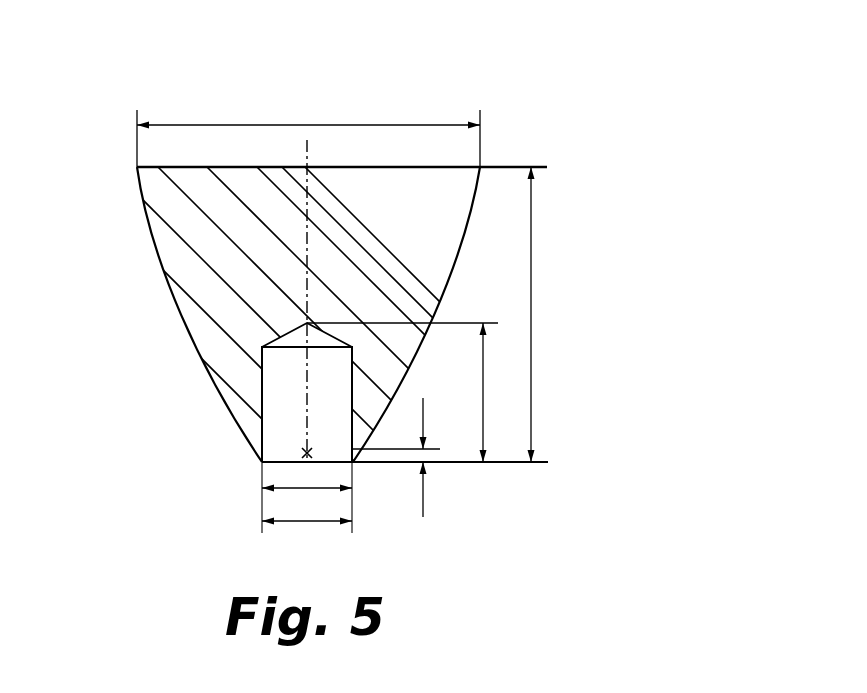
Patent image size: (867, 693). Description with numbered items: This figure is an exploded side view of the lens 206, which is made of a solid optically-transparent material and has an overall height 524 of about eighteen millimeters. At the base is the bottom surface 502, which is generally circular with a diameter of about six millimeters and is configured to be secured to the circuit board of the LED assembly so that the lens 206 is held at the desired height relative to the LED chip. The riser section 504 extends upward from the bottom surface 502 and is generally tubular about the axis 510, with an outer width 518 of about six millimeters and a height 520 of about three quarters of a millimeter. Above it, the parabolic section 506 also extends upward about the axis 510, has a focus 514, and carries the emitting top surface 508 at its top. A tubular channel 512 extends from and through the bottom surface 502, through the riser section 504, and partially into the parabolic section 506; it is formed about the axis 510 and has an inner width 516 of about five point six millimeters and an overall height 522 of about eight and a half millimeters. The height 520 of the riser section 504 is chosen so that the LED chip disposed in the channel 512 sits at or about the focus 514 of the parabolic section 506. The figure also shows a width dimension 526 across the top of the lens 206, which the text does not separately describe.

The lens 206 is at (123, 92).
The bottom surface 502 is at (275, 464).
The riser section 504 is at (258, 455).
The parabolic section 506 is at (163, 262).
The emitting top surface 508 is at (465, 205).
The axis 510 is at (310, 149).
The channel 512 is at (260, 405).
The focus 514 is at (308, 454).
The inner width of the channel 516 is at (307, 500).
The outer width of the riser section 518 is at (307, 533).
The height of the riser section 520 is at (404, 457).
The overall height of the channel 522 is at (410, 392).
The overall height of the lens 524 is at (548, 314).
The optical element width 526 is at (308, 131).